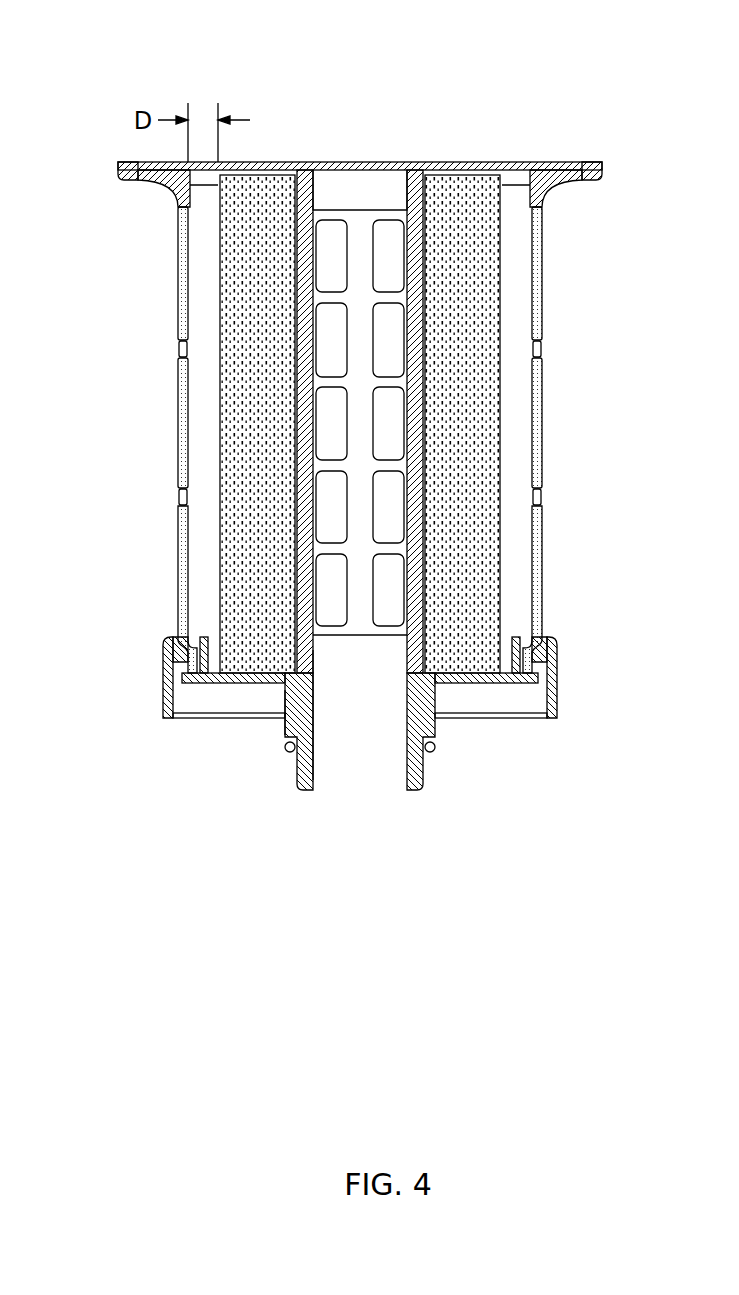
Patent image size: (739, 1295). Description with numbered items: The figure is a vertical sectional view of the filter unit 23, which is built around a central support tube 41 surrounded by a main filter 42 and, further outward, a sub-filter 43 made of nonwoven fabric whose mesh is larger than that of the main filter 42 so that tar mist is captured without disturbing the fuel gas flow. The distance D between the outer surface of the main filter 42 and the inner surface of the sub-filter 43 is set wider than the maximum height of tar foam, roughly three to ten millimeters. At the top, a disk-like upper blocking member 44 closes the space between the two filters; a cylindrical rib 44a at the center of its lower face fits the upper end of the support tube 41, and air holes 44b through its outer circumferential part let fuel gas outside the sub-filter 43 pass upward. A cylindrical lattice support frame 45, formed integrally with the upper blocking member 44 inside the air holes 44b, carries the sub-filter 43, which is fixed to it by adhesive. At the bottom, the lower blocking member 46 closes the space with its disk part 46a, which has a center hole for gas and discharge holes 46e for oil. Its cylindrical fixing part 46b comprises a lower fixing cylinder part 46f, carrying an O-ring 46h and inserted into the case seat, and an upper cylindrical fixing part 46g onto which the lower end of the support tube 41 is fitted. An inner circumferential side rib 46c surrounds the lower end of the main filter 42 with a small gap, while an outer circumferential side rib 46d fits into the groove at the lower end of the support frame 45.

The filter unit 23 is at (350, 108).
The support tube 41 is at (360, 228).
The main filter 42 is at (265, 290).
The sub-filter 43 is at (178, 548).
The upper blocking member 44 is at (511, 162).
The cylindrical rib 44a is at (316, 170).
The air holes 44b is at (155, 182).
The support frame 45 is at (180, 498).
The lower blocking member 46 is at (363, 766).
The disk part 46a is at (262, 685).
The cylindrical fixing part 46b is at (423, 845).
The inner circumferential side rib 46c is at (520, 640).
The outer circumferential side rib 46d is at (550, 660).
The discharge holes 46e is at (183, 645).
The lower fixing cylinder part 46f is at (313, 758).
The upper cylindrical fixing part 46g is at (318, 655).
The O-ring 46h is at (397, 765).